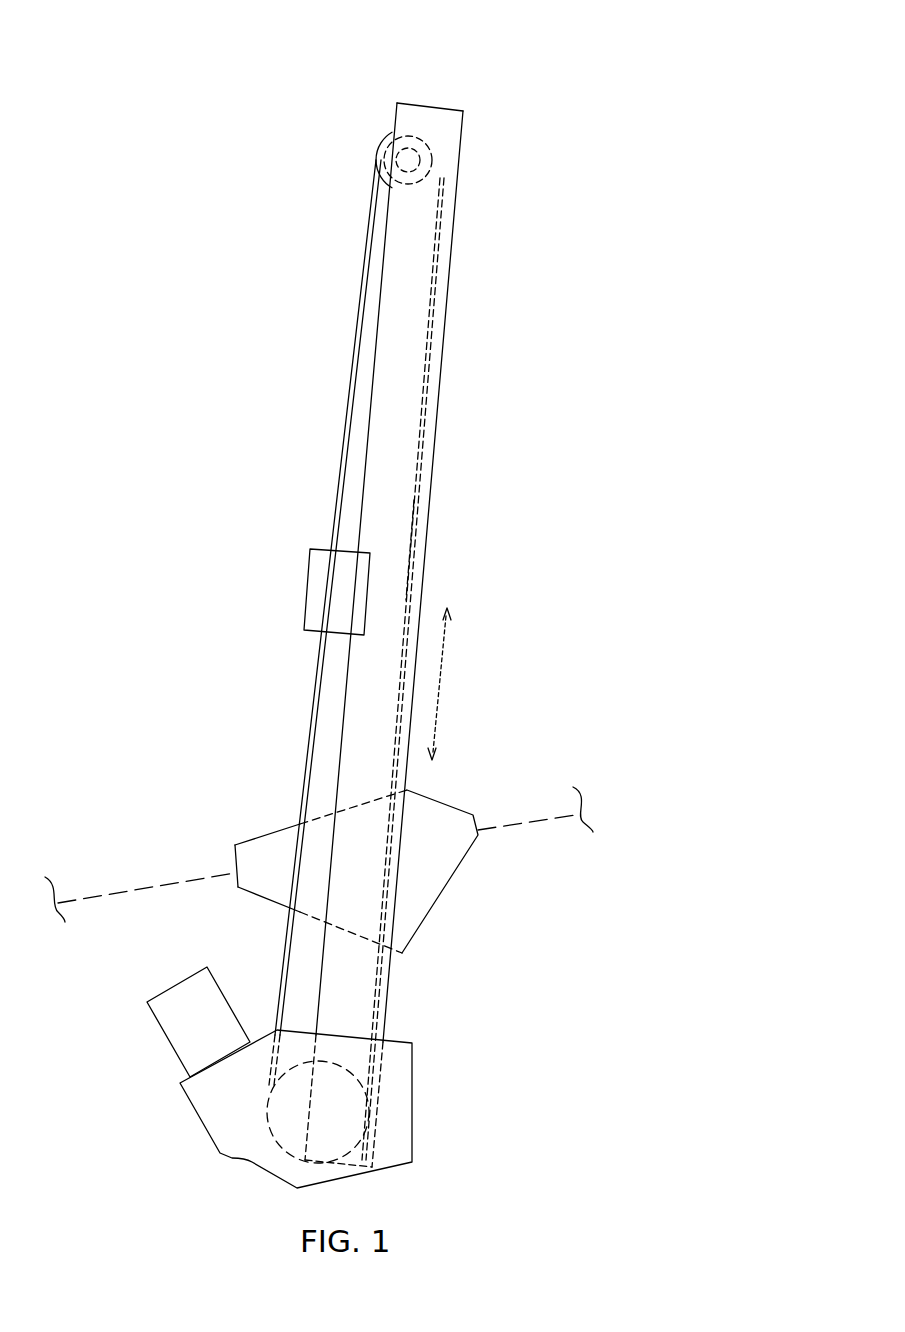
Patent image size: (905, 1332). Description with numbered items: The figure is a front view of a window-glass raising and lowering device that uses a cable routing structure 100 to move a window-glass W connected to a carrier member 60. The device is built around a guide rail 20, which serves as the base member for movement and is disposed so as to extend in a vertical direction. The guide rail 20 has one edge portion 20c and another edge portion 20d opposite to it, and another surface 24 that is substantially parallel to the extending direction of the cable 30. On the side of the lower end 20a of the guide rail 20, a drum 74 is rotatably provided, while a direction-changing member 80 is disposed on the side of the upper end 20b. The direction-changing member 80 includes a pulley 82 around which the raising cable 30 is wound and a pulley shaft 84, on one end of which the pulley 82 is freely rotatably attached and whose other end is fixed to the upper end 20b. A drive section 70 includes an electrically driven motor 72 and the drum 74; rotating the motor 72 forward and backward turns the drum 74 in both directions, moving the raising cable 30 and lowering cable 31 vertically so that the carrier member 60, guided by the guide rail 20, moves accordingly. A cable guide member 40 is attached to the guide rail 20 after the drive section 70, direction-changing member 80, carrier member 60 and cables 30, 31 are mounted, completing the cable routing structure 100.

The cable routing structure 100 is at (316, 517).
The guide rail 20 is at (432, 509).
The lower end 20a is at (355, 1178).
The upper end 20b is at (438, 105).
The one edge portion 20c is at (373, 367).
The another edge portion 20d is at (440, 381).
The another surface 24 is at (398, 546).
The cable 30 is at (340, 441).
The cable 31 is at (379, 995).
The cable guide member 40 is at (305, 589).
The carrier member 60 is at (433, 790).
The drive section 70 is at (161, 1087).
The motor 72 is at (148, 1010).
The drum 74 is at (343, 1113).
The direction-changing member 80 is at (373, 138).
The pulley 82 is at (433, 142).
The pulley shaft 84 is at (410, 160).
The window-glass W is at (520, 805).